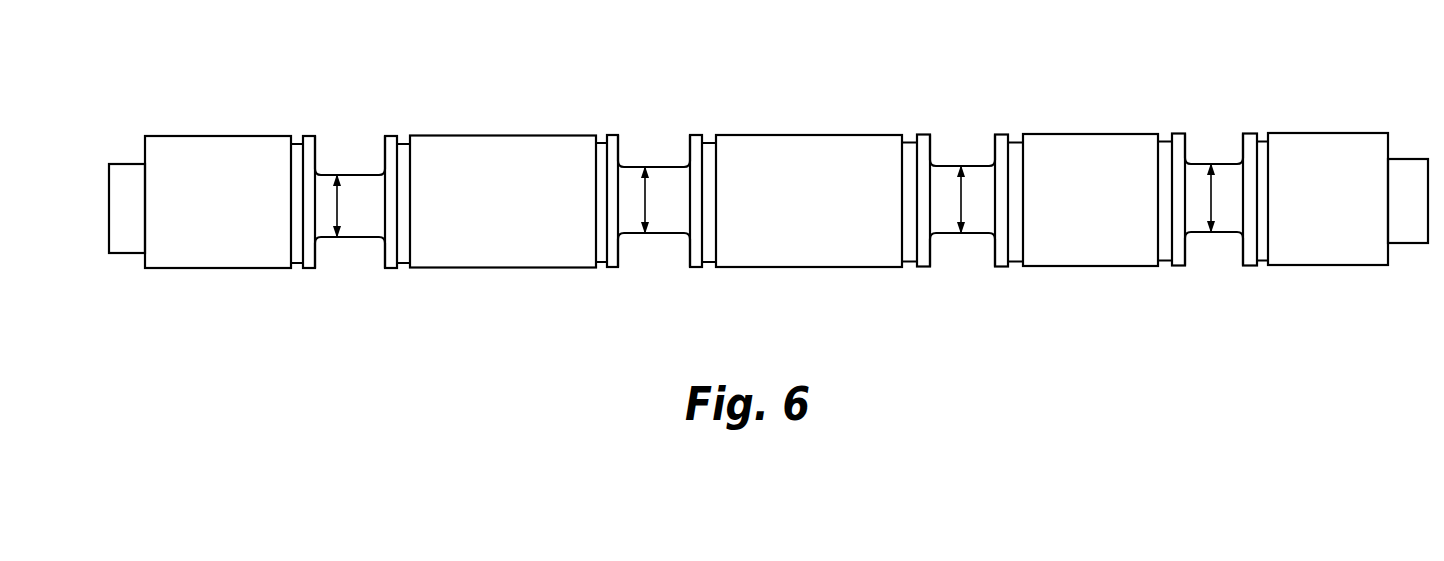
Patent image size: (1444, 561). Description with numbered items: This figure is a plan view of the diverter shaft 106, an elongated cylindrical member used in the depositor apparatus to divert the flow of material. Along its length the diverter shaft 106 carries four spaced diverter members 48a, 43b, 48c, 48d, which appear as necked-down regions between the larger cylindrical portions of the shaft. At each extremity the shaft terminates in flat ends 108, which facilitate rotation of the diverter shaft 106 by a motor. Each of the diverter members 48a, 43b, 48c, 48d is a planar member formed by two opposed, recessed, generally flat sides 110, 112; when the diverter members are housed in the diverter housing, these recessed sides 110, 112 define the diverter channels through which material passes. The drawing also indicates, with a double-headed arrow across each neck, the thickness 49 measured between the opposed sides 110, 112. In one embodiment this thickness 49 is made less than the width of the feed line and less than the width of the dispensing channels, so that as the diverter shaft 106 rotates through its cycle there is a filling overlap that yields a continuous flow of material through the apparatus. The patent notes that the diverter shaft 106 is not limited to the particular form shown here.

The diverter shaft 106 is at (787, 117).
The flat ends 108 is at (123, 162).
The diverter member 48a is at (333, 142).
The diverter member 43b is at (647, 148).
The diverter member 48c is at (950, 155).
The diverter member 48d is at (1199, 135).
The recessed flat side 110 is at (357, 160).
The recessed flat side 112 is at (348, 250).
The thickness 49 is at (337, 205).